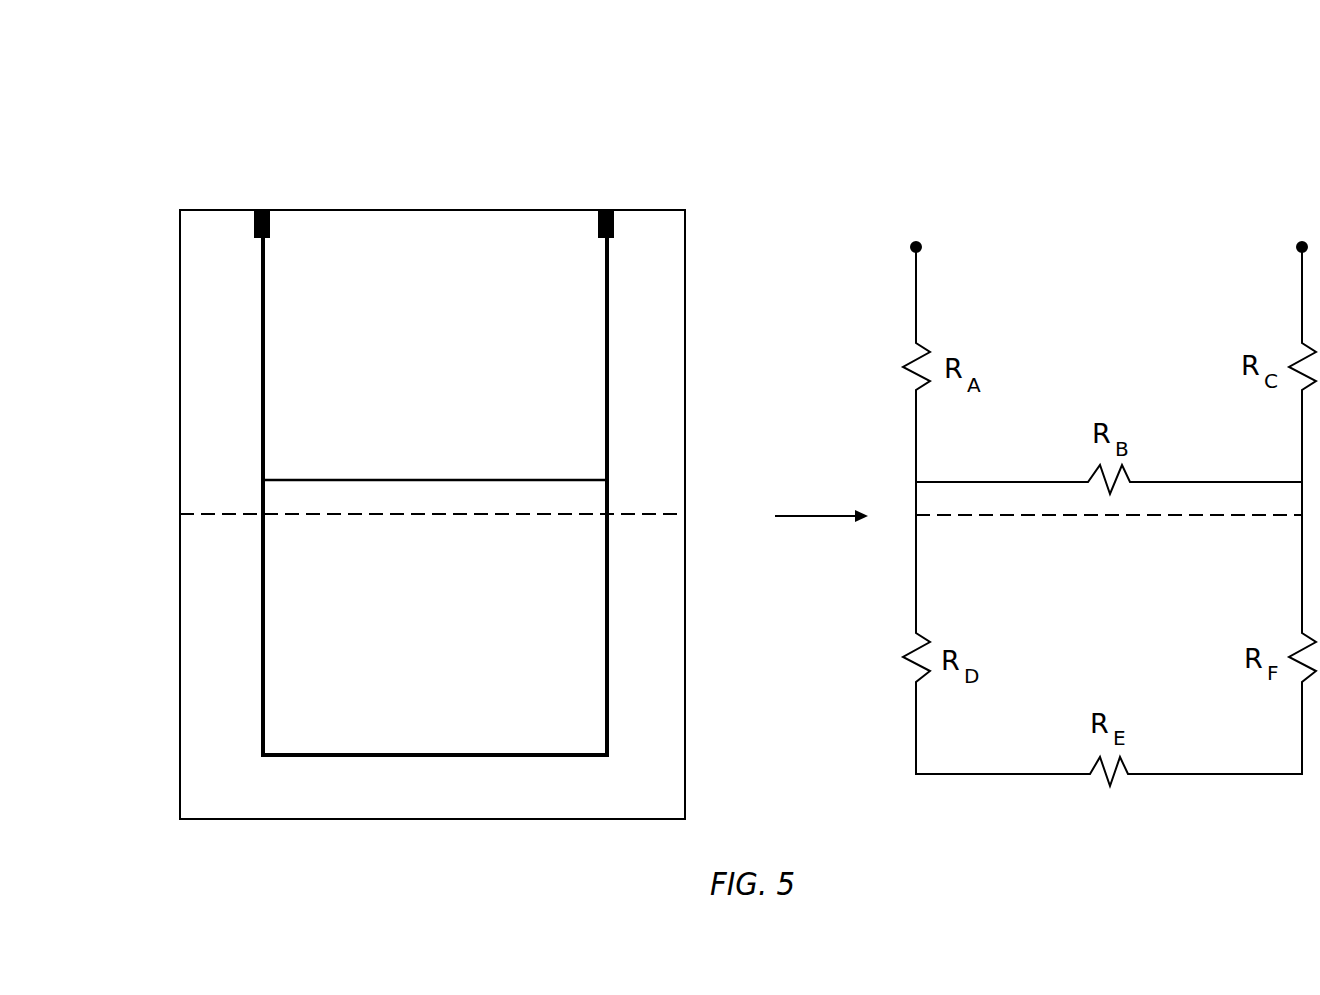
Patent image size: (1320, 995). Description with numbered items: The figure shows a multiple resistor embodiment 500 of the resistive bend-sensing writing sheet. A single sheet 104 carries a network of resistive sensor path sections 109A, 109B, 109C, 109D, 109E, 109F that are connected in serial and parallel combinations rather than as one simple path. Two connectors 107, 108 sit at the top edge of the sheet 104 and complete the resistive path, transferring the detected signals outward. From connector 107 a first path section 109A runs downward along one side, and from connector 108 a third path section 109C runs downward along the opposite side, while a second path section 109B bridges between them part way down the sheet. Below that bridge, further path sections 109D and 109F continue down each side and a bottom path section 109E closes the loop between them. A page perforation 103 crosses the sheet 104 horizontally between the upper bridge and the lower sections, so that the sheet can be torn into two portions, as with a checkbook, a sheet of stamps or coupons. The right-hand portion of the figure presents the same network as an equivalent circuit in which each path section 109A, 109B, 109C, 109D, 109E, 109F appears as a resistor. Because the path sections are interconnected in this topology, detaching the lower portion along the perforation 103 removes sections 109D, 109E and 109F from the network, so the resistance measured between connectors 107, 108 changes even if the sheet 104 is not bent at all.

The multiple resistor embodiment 500 is at (453, 159).
The sheet 104 is at (650, 298).
The page perforation 103 is at (685, 514).
The connector 107 is at (262, 210).
The connector 108 is at (606, 210).
The resistive sensor path section 109A is at (263, 372).
The resistive sensor path section 109B is at (386, 480).
The resistive sensor path section 109C is at (607, 372).
The resistive sensor path section 109D is at (263, 628).
The resistive sensor path section 109E is at (386, 755).
The resistive sensor path section 109F is at (607, 628).